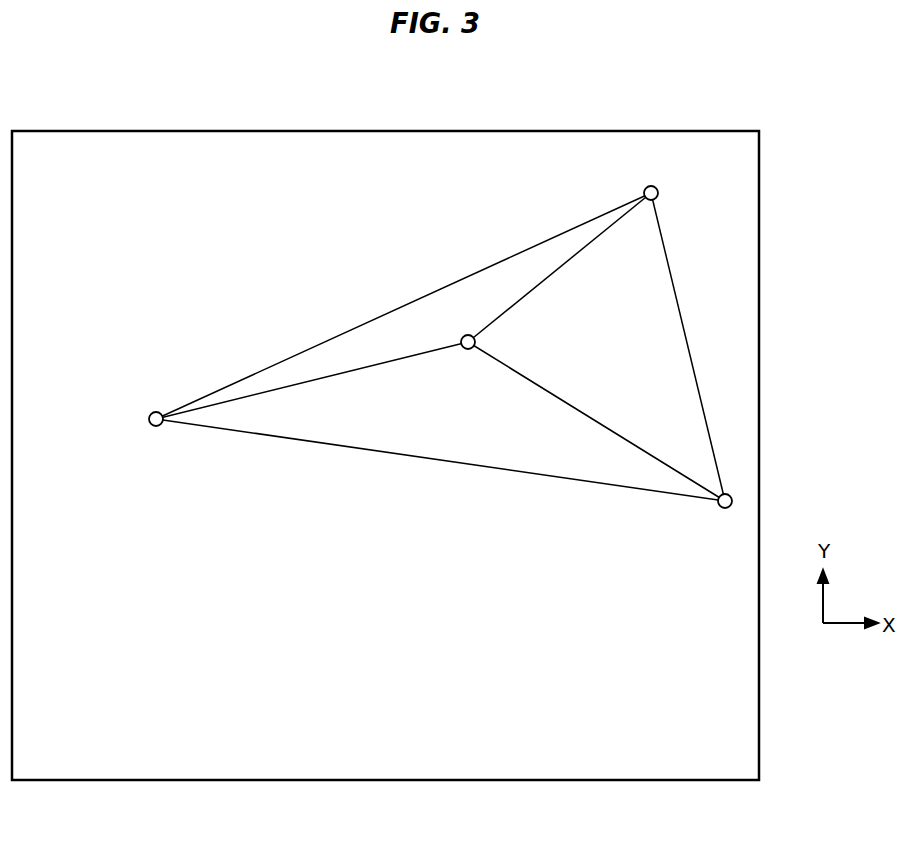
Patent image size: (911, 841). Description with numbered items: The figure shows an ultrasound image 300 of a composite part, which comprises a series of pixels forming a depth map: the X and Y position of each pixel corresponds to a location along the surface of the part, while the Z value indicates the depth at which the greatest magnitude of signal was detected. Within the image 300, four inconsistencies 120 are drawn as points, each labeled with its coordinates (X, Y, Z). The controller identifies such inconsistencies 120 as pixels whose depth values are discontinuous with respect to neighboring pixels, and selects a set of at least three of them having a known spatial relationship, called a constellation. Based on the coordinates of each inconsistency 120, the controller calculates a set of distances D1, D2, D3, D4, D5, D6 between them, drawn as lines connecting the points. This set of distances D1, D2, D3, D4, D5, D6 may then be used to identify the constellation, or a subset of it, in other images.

The inconsistency 120 is at (658, 193).
The image 300 is at (760, 222).
The distance D1 is at (312, 378).
The distance D2 is at (596, 421).
The distance D3 is at (440, 460).
The distance D4 is at (403, 306).
The distance D5 is at (559, 267).
The distance D6 is at (688, 347).